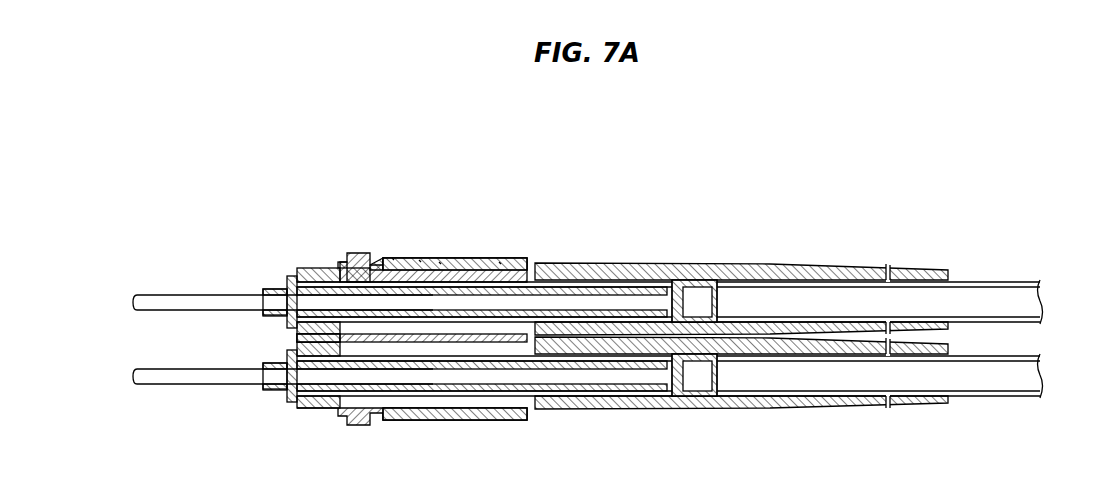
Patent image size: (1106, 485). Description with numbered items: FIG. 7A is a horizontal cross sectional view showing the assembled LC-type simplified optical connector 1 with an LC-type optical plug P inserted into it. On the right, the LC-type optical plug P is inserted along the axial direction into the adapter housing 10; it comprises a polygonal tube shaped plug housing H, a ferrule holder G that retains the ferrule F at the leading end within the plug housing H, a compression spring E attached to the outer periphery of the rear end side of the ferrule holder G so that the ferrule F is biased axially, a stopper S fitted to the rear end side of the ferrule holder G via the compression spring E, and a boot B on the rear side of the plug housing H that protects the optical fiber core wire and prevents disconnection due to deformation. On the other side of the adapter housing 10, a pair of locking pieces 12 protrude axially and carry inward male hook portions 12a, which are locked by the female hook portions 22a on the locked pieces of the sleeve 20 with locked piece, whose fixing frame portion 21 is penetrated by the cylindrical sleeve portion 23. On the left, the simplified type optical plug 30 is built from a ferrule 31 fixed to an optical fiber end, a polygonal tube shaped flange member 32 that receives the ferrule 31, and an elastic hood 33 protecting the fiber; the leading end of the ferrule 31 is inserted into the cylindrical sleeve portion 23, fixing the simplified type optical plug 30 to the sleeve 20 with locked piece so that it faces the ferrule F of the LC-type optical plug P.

The LC-type simplified optical connector 1 is at (465, 172).
The adapter housing 10 is at (468, 262).
The locking piece 12 is at (318, 267).
The male hook portion 12a is at (296, 274).
The sleeve with locked piece 20 is at (343, 262).
The fixing frame portion 21 is at (338, 261).
The female hook portion 22a is at (300, 268).
The cylindrical sleeve portion 23 is at (383, 258).
The simplified type optical plug 30 is at (263, 277).
The ferrule 31 is at (312, 339).
The flange member 32 is at (296, 314).
The hood 33 is at (264, 289).
The stopper S is at (570, 265).
The boot B is at (683, 267).
The LC-type optical plug P is at (818, 262).
The compression spring E is at (500, 262).
The ferrule F is at (393, 258).
The ferrule holder G is at (440, 262).
The plug housing H is at (420, 260).